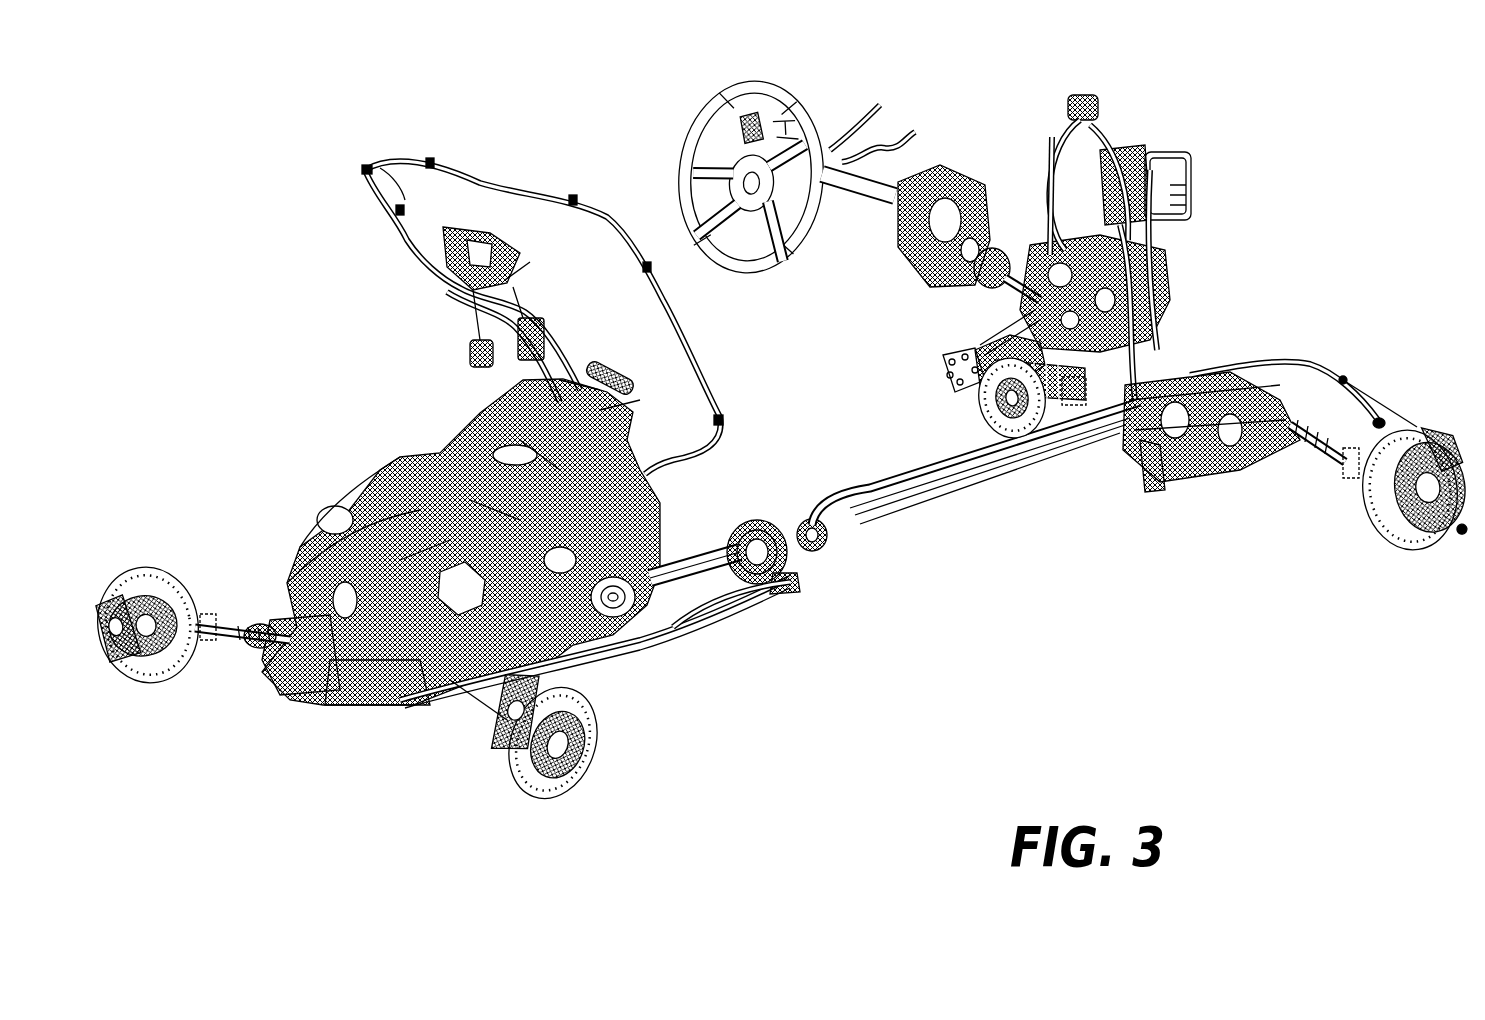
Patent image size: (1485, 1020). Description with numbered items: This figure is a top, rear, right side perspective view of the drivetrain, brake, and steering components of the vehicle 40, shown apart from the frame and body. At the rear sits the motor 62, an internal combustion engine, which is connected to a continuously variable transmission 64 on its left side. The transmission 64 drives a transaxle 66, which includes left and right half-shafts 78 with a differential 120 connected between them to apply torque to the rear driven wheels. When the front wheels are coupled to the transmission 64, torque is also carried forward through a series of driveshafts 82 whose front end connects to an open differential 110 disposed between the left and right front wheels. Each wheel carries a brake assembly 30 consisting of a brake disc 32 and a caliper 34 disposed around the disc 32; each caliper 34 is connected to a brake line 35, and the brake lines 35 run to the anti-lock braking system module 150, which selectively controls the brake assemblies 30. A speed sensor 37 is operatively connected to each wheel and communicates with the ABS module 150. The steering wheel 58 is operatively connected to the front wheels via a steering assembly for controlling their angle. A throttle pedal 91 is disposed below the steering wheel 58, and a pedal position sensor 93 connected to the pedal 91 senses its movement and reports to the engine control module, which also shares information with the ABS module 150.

The brake assembly 30 is at (180, 528).
The brake disc 32 is at (132, 675).
The caliper 34 is at (120, 590).
The brake line 35 is at (1348, 378).
The speed sensor 37 is at (220, 615).
The vehicle 40 is at (1268, 56).
The steering wheel 58 is at (735, 95).
The motor 62 is at (670, 517).
The transmission 64 is at (388, 424).
The transaxle 66 is at (283, 740).
The half-shaft 78 is at (470, 710).
The driveshaft 82 is at (930, 545).
The throttle pedal 91 is at (945, 356).
The pedal position sensor 93 is at (978, 160).
The differential 110 is at (1238, 335).
The differential 120 is at (350, 700).
The anti-lock braking system (ABS) module 150 is at (1200, 155).